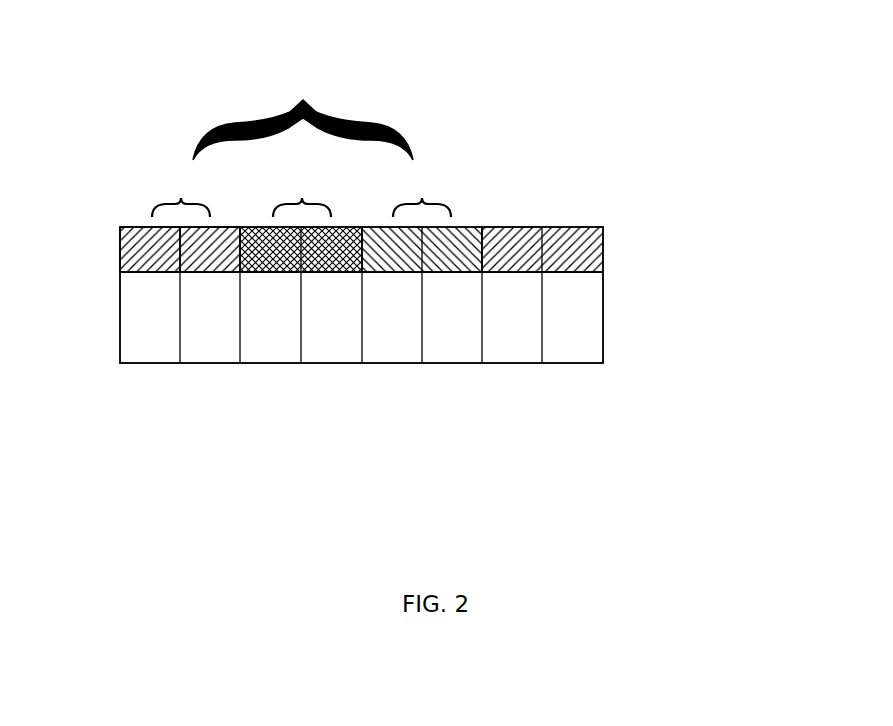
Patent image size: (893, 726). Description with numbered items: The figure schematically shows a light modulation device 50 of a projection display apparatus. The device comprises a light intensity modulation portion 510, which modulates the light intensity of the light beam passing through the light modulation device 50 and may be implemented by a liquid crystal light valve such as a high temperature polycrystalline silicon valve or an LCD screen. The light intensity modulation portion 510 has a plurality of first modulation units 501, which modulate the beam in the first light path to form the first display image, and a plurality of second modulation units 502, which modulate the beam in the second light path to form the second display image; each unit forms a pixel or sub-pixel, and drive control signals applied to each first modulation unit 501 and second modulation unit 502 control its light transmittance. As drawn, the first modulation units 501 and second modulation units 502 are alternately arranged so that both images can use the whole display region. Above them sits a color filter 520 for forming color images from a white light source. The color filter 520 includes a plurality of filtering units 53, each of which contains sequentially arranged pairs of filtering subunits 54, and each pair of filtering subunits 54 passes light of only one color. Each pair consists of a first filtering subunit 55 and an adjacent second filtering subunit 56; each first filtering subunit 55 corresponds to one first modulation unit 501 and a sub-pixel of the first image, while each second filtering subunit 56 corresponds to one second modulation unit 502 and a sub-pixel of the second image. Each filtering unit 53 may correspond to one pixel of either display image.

The light modulation device 50 is at (333, 27).
The filtering unit 53 is at (303, 116).
The pair of filtering subunits 54 is at (301, 190).
The first filtering subunit 55 is at (135, 243).
The second filtering subunit 56 is at (215, 258).
The first modulation unit 501 is at (398, 333).
The second modulation unit 502 is at (210, 333).
The light intensity modulation portion 510 is at (632, 318).
The color filter 520 is at (632, 258).